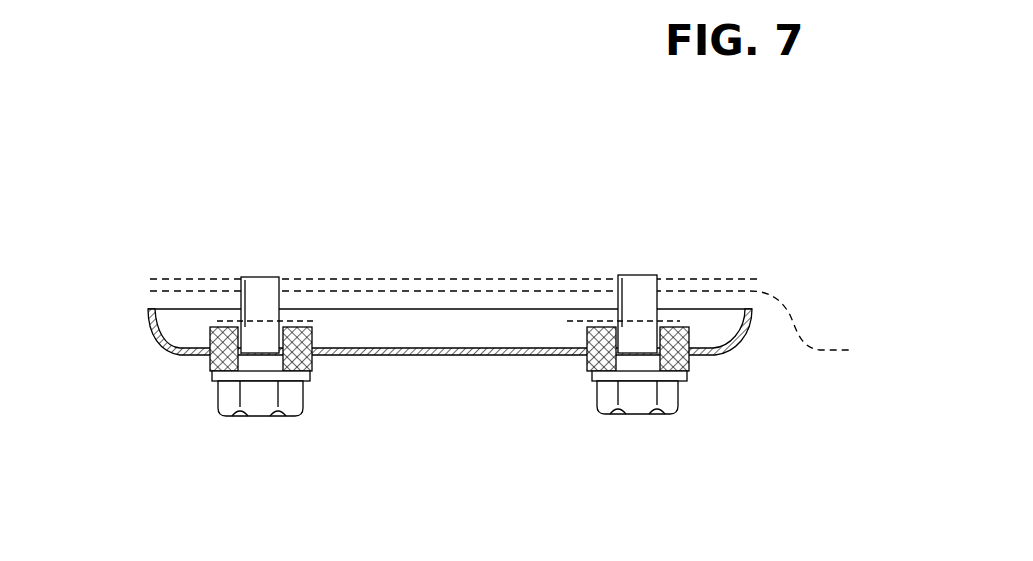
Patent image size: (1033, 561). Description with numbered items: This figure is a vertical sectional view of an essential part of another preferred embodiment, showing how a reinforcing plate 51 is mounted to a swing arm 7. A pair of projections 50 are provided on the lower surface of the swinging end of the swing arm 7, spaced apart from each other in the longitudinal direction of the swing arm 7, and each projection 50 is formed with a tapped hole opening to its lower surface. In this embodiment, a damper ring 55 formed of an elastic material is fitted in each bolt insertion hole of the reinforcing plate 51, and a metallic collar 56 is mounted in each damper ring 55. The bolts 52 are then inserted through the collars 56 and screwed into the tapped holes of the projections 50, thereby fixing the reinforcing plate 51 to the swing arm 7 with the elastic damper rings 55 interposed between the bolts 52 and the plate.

The swing arm 7 is at (512, 322).
The projection 50 is at (305, 320).
The reinforcing plate 51 is at (358, 356).
The bolt 52 is at (650, 414).
The damper ring 55 is at (795, 460).
The collar 56 is at (743, 193).